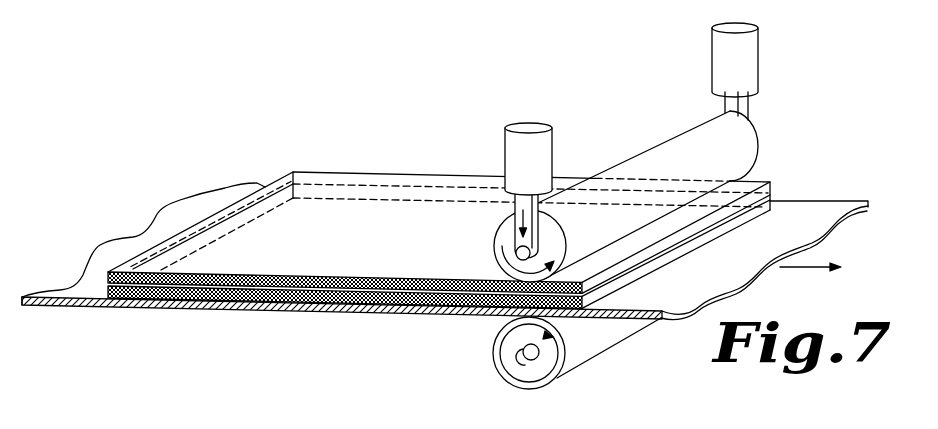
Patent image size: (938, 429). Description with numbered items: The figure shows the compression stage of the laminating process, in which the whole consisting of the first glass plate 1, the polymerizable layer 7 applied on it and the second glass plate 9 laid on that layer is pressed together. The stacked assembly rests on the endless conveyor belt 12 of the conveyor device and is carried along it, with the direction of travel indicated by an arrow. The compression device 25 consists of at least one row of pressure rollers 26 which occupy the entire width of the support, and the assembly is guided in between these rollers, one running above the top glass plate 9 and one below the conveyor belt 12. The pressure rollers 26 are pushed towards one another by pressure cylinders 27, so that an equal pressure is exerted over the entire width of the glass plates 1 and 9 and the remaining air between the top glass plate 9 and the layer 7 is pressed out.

The glass plate 1 is at (163, 311).
The polymerizable layer 7 is at (262, 309).
The second glass plate 9 is at (374, 282).
The endless conveyor belt 12 is at (74, 288).
The compression device 25 is at (666, 213).
The pressure rollers 26 is at (742, 143).
The pressure cylinders 27 is at (539, 101).